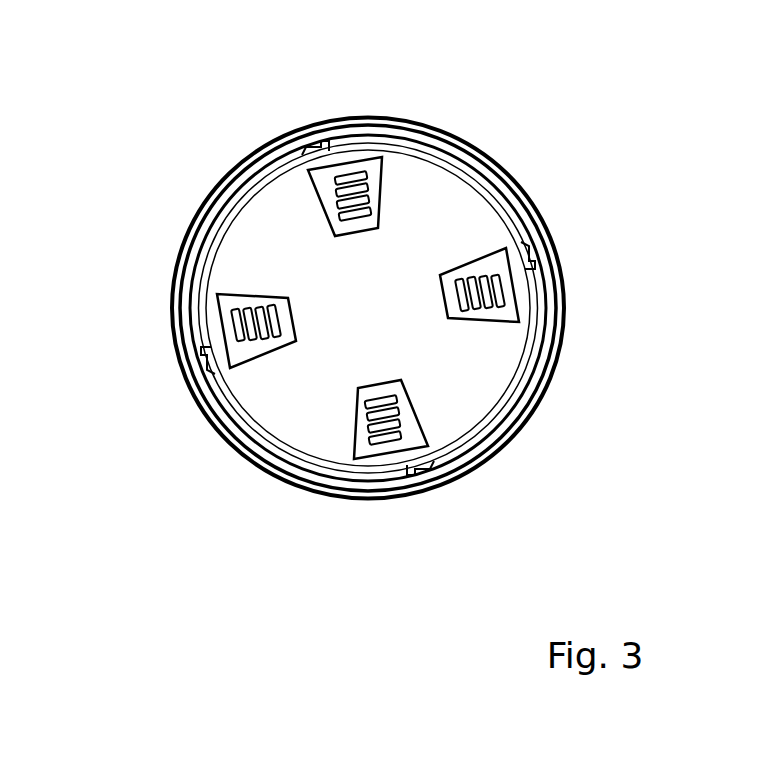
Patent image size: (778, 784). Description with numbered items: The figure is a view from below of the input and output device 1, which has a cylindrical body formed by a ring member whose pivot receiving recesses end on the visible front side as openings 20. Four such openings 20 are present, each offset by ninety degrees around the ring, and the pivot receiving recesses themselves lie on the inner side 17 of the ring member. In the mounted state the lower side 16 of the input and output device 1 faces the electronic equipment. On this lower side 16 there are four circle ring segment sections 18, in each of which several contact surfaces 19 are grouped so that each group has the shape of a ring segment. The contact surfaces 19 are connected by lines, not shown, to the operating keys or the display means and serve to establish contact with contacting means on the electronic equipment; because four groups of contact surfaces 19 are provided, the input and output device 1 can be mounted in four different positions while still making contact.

The input and output device 1 is at (508, 138).
The lower side 16 is at (470, 389).
The inner side 17 is at (508, 206).
The circle ring segment section 18 is at (273, 145).
The contact surface 19 is at (378, 195).
The opening 20 is at (323, 143).